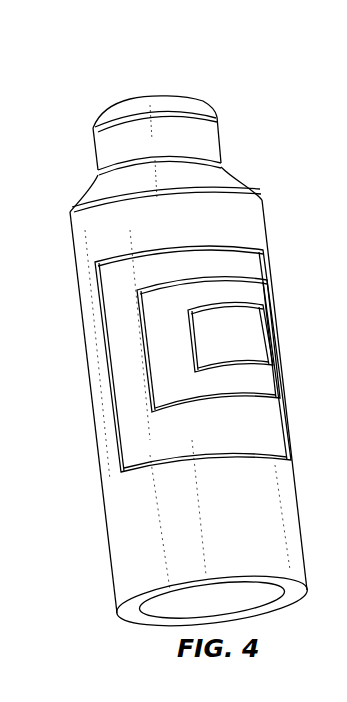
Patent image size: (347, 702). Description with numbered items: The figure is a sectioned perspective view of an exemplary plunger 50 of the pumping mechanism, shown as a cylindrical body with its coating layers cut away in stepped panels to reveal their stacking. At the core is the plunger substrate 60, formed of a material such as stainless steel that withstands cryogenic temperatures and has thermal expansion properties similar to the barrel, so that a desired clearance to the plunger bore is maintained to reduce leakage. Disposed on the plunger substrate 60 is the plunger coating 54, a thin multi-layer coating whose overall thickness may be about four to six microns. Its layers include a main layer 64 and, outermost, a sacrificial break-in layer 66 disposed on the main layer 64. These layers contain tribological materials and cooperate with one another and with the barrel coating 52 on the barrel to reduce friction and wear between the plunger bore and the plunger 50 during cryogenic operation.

The plunger 50 is at (275, 115).
The plunger coating 54 is at (227, 227).
The barrel coating 52 is at (170, 352).
The plunger substrate 60 is at (239, 344).
The main layer 64 is at (165, 444).
The sacrificial break-in layer 66 is at (165, 514).